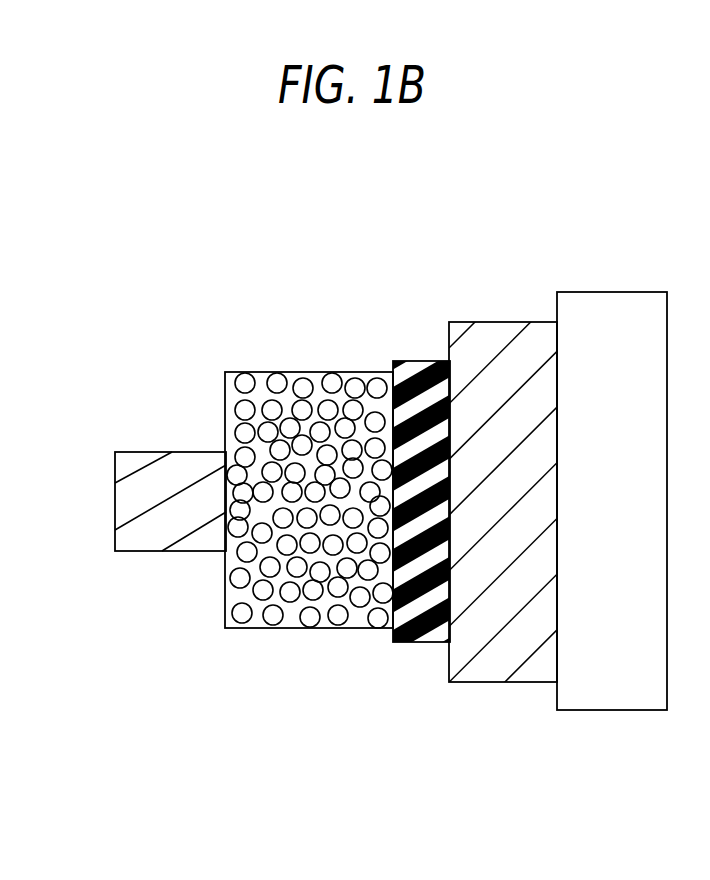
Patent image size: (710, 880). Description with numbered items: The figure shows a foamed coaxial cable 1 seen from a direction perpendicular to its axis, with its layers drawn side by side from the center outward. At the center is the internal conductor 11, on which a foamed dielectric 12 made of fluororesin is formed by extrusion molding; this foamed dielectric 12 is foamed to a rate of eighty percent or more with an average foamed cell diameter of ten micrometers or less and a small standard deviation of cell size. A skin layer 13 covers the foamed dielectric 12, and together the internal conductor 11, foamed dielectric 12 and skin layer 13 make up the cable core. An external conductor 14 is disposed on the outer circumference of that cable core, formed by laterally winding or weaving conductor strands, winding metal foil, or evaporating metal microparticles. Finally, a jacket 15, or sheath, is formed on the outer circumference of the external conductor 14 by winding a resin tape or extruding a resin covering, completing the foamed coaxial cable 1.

The foamed coaxial cable 1 is at (263, 760).
The internal conductor 11 is at (162, 452).
The foamed dielectric 12 is at (283, 372).
The skin layer 13 is at (410, 361).
The external conductor 14 is at (513, 322).
The jacket 15 is at (614, 292).